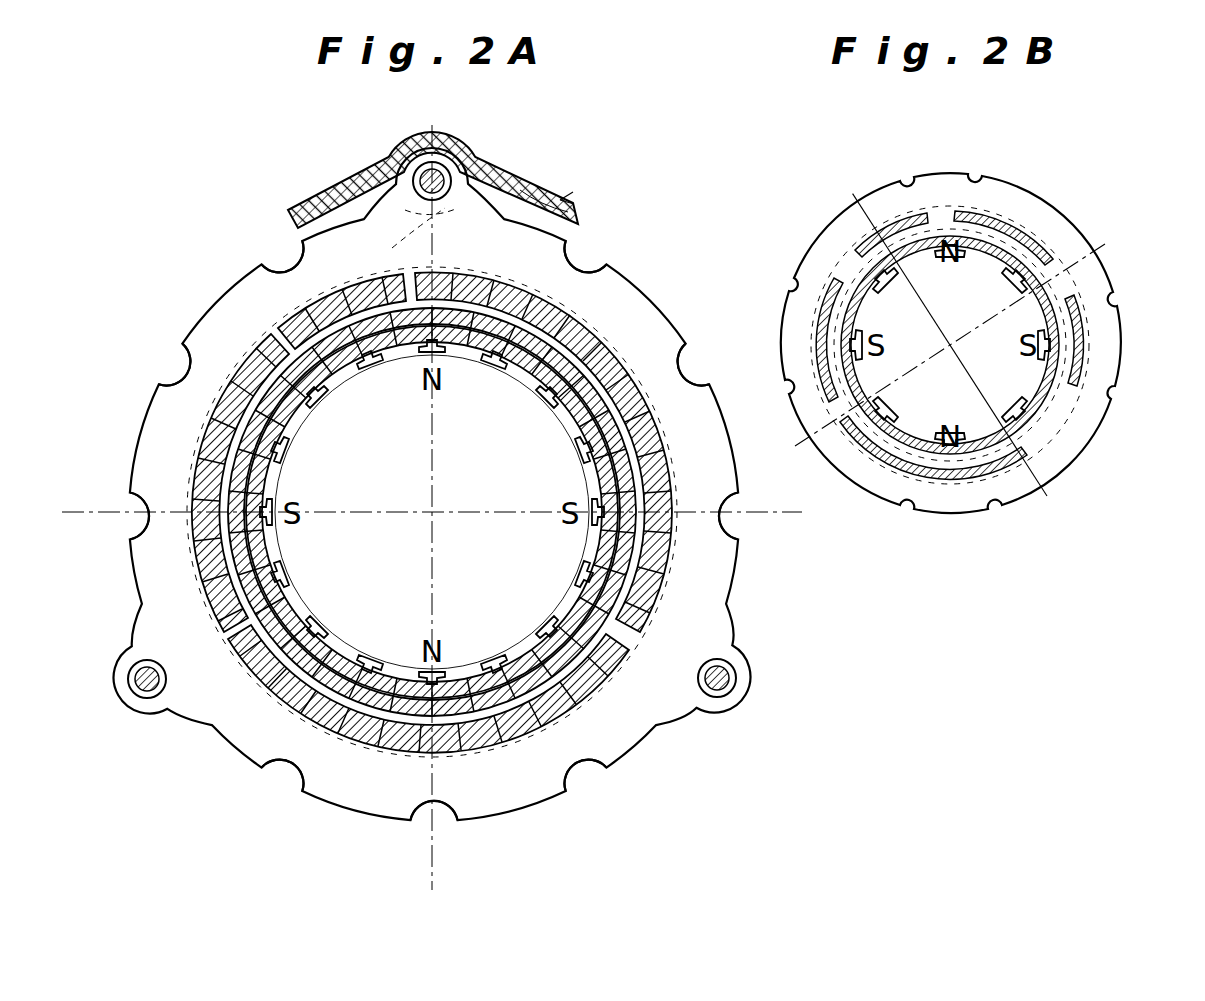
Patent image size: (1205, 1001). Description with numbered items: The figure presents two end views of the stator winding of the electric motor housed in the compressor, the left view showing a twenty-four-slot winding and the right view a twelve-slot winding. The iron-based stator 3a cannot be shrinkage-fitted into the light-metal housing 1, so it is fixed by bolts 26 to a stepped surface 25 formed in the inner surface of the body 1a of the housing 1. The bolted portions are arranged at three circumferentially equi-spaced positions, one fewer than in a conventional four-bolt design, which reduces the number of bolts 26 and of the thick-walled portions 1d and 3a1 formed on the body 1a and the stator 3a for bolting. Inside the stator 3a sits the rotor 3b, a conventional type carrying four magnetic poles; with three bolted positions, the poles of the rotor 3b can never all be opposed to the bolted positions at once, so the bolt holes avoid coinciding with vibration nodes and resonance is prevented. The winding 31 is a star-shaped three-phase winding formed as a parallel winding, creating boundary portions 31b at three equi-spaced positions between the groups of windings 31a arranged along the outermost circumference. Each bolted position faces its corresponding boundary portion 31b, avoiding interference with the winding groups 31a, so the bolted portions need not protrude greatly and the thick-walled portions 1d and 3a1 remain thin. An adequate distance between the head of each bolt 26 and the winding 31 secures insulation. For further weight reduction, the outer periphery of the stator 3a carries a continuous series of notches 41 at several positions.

In FIG. 2A, the housing 1 is at (560, 200).
In FIG. 2A, the body 1a is at (367, 196).
In FIG. 2A, the thick-walled portion 1d is at (447, 138).
In FIG. 2A, the stator 3a is at (237, 307).
In FIG. 2A, the thick-walled portion 3a1 is at (456, 152).
In FIG. 2A, the rotor 3b is at (605, 418).
In FIG. 2A, the stepped surface 25 is at (520, 190).
In FIG. 2A, the bolt 26 is at (456, 184).
In FIG. 2A, the winding 31 is at (210, 428).
In FIG. 2A, the winding group 31a is at (660, 440).
In FIG. 2B, the winding group 31a is at (868, 230).
In FIG. 2A, the boundary portion 31b is at (525, 258).
In FIG. 2B, the boundary portion 31b is at (939, 214).
In FIG. 2A, the notch 41 is at (283, 250).
In FIG. 2B, the notch 41 is at (798, 286).